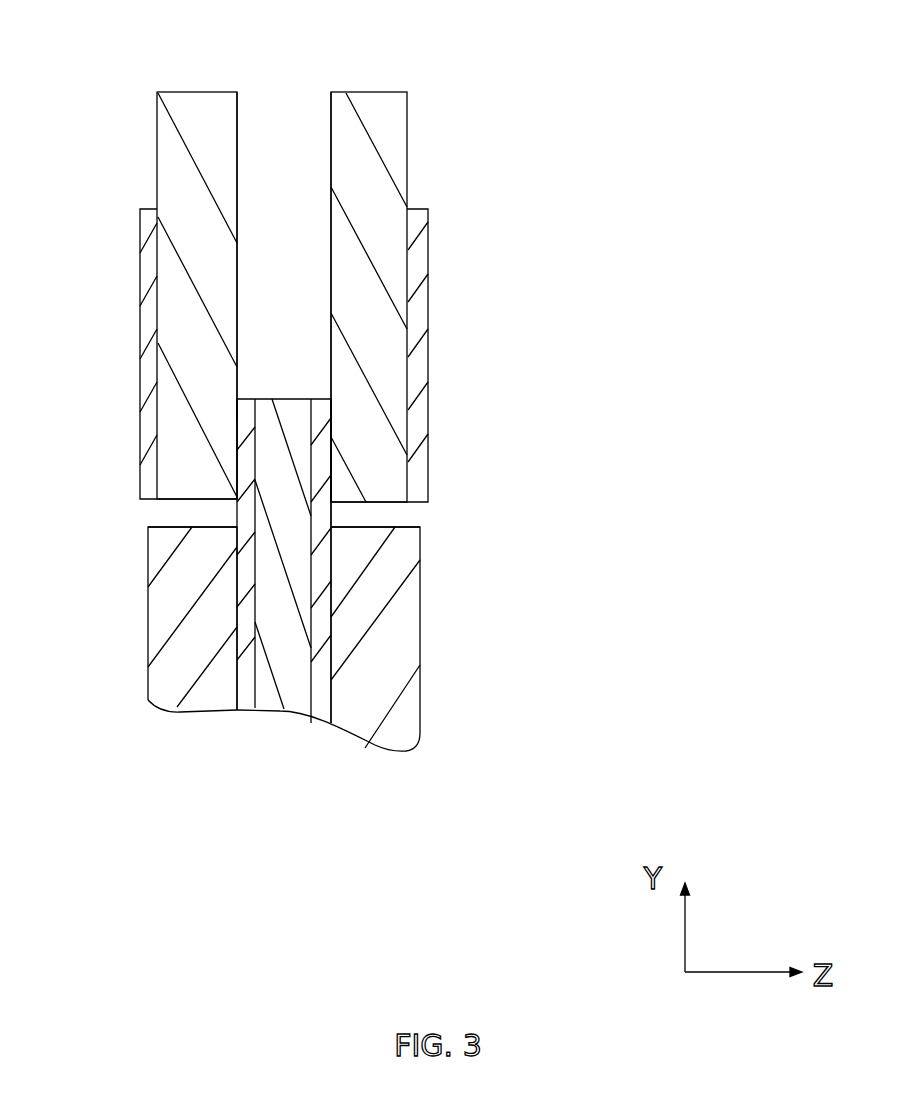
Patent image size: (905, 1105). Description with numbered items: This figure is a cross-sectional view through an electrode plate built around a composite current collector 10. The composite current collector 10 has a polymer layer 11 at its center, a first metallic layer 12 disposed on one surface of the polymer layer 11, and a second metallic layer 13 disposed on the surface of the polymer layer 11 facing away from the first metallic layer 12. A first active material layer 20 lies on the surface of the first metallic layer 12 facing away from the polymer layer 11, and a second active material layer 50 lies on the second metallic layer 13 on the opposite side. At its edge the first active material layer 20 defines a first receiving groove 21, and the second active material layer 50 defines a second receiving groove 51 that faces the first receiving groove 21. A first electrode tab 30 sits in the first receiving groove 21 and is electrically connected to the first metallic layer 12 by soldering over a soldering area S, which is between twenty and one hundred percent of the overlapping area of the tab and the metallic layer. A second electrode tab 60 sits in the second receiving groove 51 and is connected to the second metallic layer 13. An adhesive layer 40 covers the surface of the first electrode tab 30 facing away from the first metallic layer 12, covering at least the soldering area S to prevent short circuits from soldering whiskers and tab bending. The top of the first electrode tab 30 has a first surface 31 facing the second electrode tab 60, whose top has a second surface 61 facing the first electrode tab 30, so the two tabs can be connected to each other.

The composite current collector 10 is at (245, 815).
The polymer layer 11 is at (280, 688).
The first metallic layer 12 is at (240, 695).
The second metallic layer 13 is at (321, 678).
The first active material layer 20 is at (180, 627).
The first receiving groove 21 is at (155, 516).
The first electrode tab 30 is at (172, 138).
The first surface 31 is at (243, 141).
The adhesive layer 40 is at (153, 287).
The second active material layer 50 is at (383, 605).
The second receiving groove 51 is at (391, 515).
The second electrode tab 60 is at (375, 122).
The second surface 61 is at (327, 125).
The soldering area S is at (250, 410).